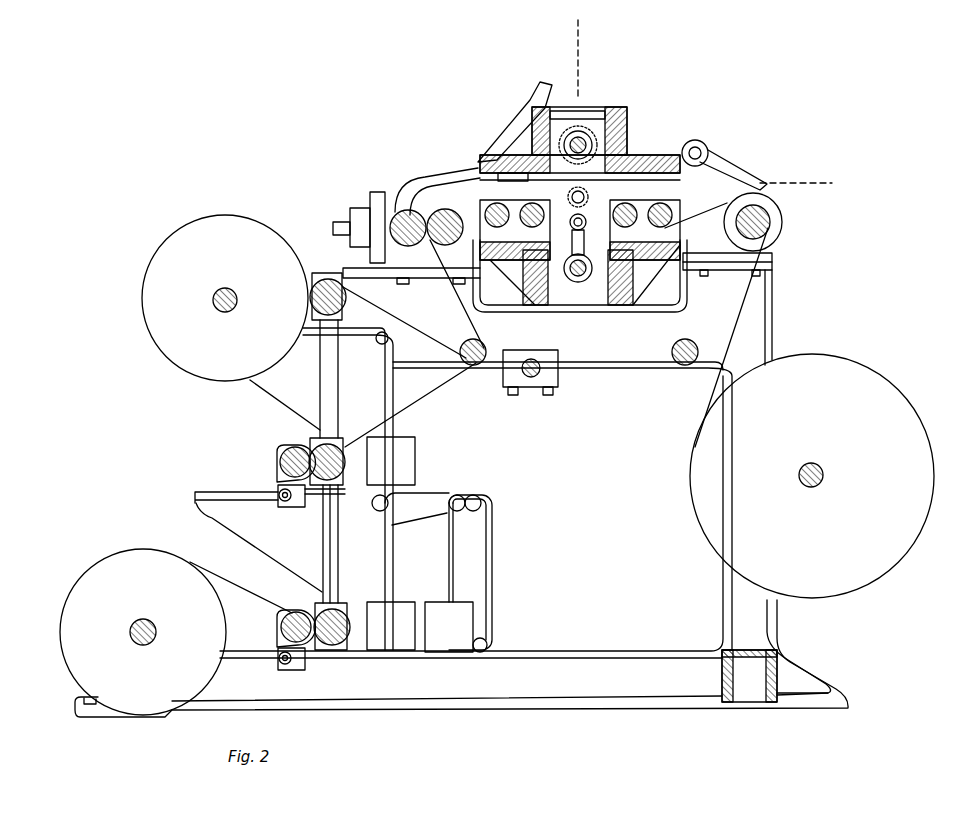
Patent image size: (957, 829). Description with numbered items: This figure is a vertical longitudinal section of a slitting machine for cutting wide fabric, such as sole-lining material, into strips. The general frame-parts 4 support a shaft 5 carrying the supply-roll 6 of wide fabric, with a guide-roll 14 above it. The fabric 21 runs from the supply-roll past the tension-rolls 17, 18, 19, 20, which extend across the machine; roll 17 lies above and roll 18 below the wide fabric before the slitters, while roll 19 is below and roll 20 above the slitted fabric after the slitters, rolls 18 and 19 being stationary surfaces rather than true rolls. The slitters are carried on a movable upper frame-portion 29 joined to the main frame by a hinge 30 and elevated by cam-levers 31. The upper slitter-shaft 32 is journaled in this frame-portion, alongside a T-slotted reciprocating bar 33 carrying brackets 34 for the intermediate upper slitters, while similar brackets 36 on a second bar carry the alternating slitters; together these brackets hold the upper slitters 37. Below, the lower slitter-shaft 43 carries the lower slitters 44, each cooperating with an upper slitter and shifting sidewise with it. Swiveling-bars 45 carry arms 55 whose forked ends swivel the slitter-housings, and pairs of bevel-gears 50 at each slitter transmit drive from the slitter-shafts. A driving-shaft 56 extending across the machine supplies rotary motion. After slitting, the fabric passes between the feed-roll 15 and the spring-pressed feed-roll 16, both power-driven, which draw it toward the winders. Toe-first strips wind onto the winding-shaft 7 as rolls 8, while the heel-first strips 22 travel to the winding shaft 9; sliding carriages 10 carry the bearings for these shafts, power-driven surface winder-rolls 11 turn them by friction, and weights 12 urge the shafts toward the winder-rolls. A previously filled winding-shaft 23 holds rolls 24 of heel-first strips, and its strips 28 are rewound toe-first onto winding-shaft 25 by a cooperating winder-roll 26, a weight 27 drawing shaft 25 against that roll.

The general frame-parts 4 is at (720, 182).
The shaft for the supply-roll 5 is at (818, 466).
The supply-roll of wide fabric 6 is at (862, 370).
The winding-shaft 7 is at (217, 292).
The rolls of toe-first strips 8 is at (172, 250).
The winding shaft 9 is at (283, 452).
The sliding carriages 10 is at (276, 480).
The surface winder-rolls 11 is at (328, 280).
The weights 12 is at (417, 462).
The guide-roll 14 is at (770, 223).
The feed-roll 15 is at (480, 216).
The spring-pressed feed-roll 16 is at (403, 200).
The tension-roll 17 is at (672, 210).
The tension-roll 18 is at (645, 219).
The tension-roll 19 is at (532, 203).
The tension-roll 20 is at (515, 219).
The fabric 21 is at (402, 332).
The heel-first strips 22 is at (440, 392).
The winding-shaft 23 is at (148, 624).
The rolls of heel-first strips 24 is at (138, 558).
The winding-shaft 25 is at (294, 613).
The winder-roll 26 is at (335, 652).
The weight 27 is at (480, 613).
The strips 28 is at (262, 585).
The movable upper portion of the general frame 29 is at (645, 138).
The hinge 30 is at (708, 153).
The cam-levers 31 is at (540, 92).
The upper slitter-shaft 32 is at (580, 135).
The bar 33 is at (615, 130).
The brackets 34 is at (628, 158).
The brackets 36 is at (540, 158).
The upper slitters 37 is at (570, 198).
The lower slitter-shaft 43 is at (580, 282).
The lower slitters 44 is at (590, 223).
The swiveling-bars 45 is at (680, 150).
The pair of bevel-gears 50 is at (540, 290).
The arms 55 is at (526, 277).
The driving-shaft 56 is at (540, 372).